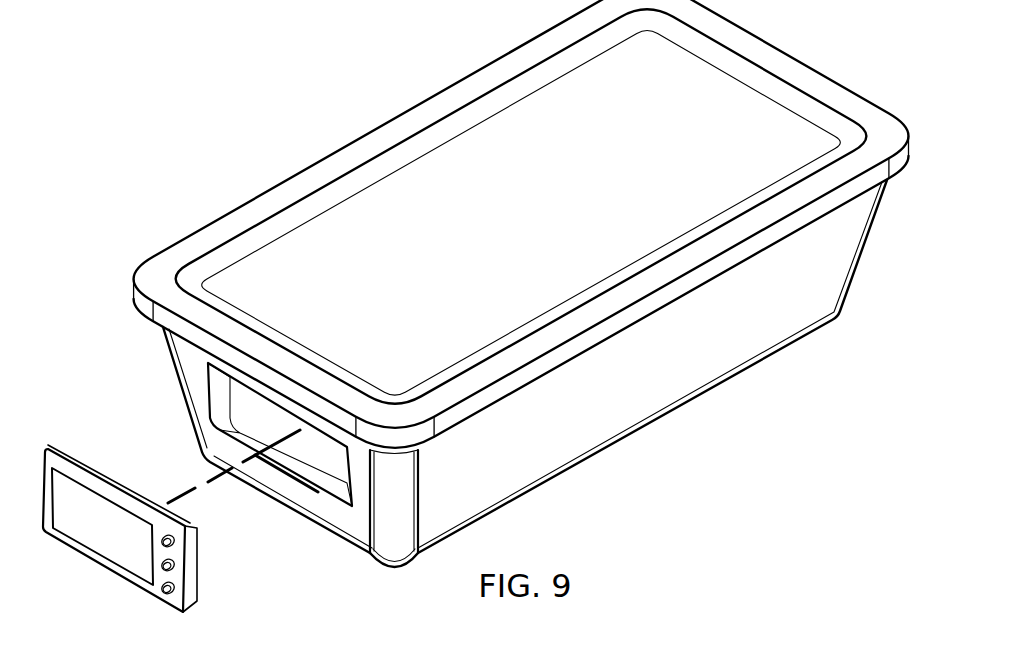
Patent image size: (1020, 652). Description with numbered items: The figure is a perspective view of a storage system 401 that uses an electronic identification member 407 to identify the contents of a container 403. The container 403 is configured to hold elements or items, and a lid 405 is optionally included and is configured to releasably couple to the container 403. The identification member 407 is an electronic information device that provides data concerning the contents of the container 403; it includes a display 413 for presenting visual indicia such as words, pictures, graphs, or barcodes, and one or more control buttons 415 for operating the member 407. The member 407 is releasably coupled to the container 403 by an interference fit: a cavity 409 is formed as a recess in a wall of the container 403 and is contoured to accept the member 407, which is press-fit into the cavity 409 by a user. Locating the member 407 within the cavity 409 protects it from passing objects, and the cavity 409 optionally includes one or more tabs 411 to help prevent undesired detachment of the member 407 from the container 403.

The storage system 401 is at (184, 147).
The container 403 is at (638, 372).
The lid 405 is at (628, 194).
The identification member 407 is at (105, 455).
The cavity 409 is at (305, 466).
The tab 411 is at (348, 483).
The display 413 is at (80, 538).
The control buttons 415 is at (222, 586).